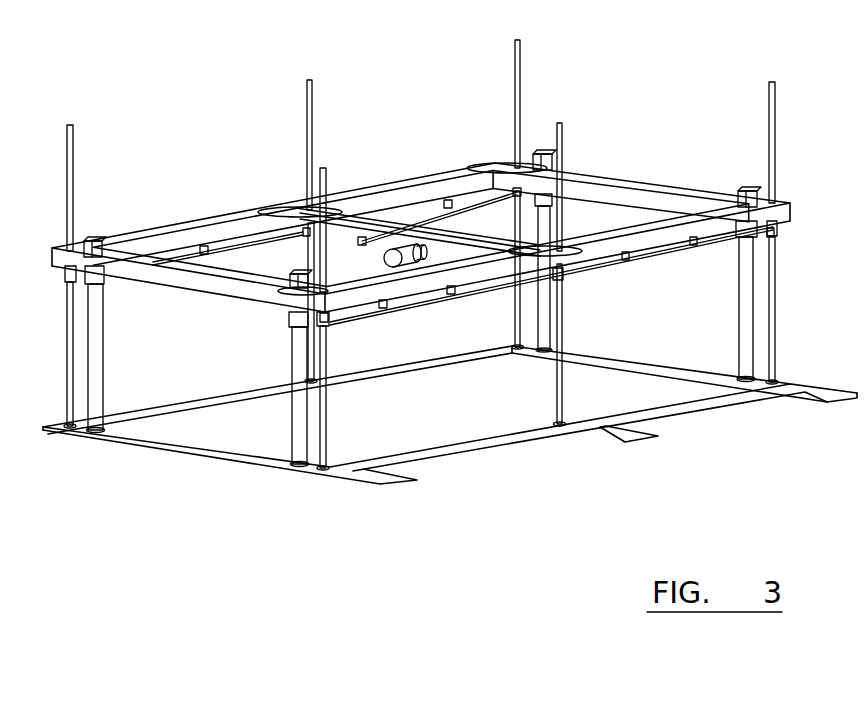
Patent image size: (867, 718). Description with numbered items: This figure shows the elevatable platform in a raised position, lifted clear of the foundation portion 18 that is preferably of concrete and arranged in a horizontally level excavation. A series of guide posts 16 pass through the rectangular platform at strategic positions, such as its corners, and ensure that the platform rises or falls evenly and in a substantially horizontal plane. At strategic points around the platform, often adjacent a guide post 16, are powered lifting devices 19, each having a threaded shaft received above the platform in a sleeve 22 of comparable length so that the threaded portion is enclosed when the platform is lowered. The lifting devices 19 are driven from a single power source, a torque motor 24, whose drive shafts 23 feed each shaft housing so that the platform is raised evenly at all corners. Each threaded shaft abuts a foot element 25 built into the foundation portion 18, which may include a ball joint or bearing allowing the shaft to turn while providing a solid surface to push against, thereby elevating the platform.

The guide post 16 is at (104, 353).
The foundation portion 18 is at (187, 448).
The powered lifting device 19 is at (347, 327).
The sleeve 22 is at (73, 165).
The drive shaft 23 is at (482, 208).
The torque motor 24 is at (389, 248).
The foot element 25 is at (321, 471).